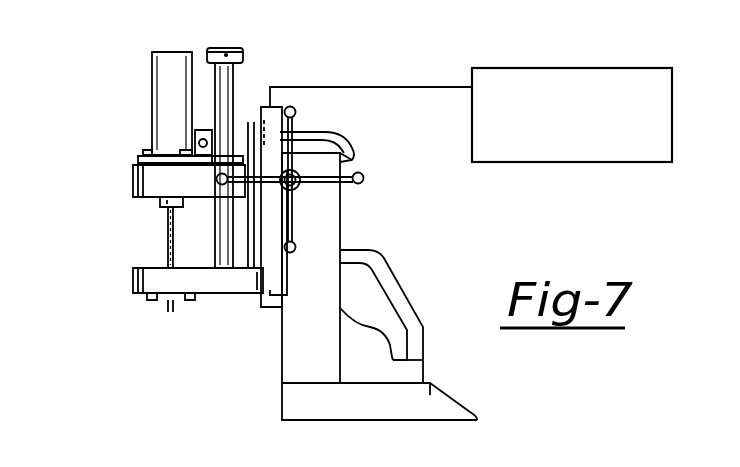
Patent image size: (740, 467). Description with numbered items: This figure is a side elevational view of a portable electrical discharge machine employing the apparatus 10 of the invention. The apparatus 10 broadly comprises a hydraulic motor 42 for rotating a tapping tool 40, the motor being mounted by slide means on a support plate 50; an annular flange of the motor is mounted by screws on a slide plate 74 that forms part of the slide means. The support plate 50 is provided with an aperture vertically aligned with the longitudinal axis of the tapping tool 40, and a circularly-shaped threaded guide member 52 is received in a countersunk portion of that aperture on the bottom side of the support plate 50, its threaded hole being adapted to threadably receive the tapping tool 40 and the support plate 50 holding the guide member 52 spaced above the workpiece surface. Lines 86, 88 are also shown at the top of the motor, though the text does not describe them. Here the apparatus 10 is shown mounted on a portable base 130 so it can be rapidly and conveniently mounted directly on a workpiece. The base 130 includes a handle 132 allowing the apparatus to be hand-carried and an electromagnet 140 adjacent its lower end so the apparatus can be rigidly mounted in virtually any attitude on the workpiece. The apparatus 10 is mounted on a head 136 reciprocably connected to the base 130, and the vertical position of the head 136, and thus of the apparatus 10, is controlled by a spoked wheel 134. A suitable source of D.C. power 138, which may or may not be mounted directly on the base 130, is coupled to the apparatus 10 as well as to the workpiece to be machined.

The apparatus 10 is at (122, 142).
The tapping tool 40 is at (167, 240).
The hydraulic motor 42 is at (163, 70).
The support plate 50 is at (133, 282).
The threaded guide member 52 is at (185, 300).
The slide plate 74 is at (132, 178).
The guide rod 86 is at (156, 135).
The guide rod cap 88 is at (183, 28).
The portable base 130 is at (292, 353).
The handle 132 is at (390, 280).
The spoked wheel 134 is at (363, 170).
The head 136 is at (272, 110).
The source of D.C. power 138 is at (600, 30).
The electromagnet 140 is at (420, 407).